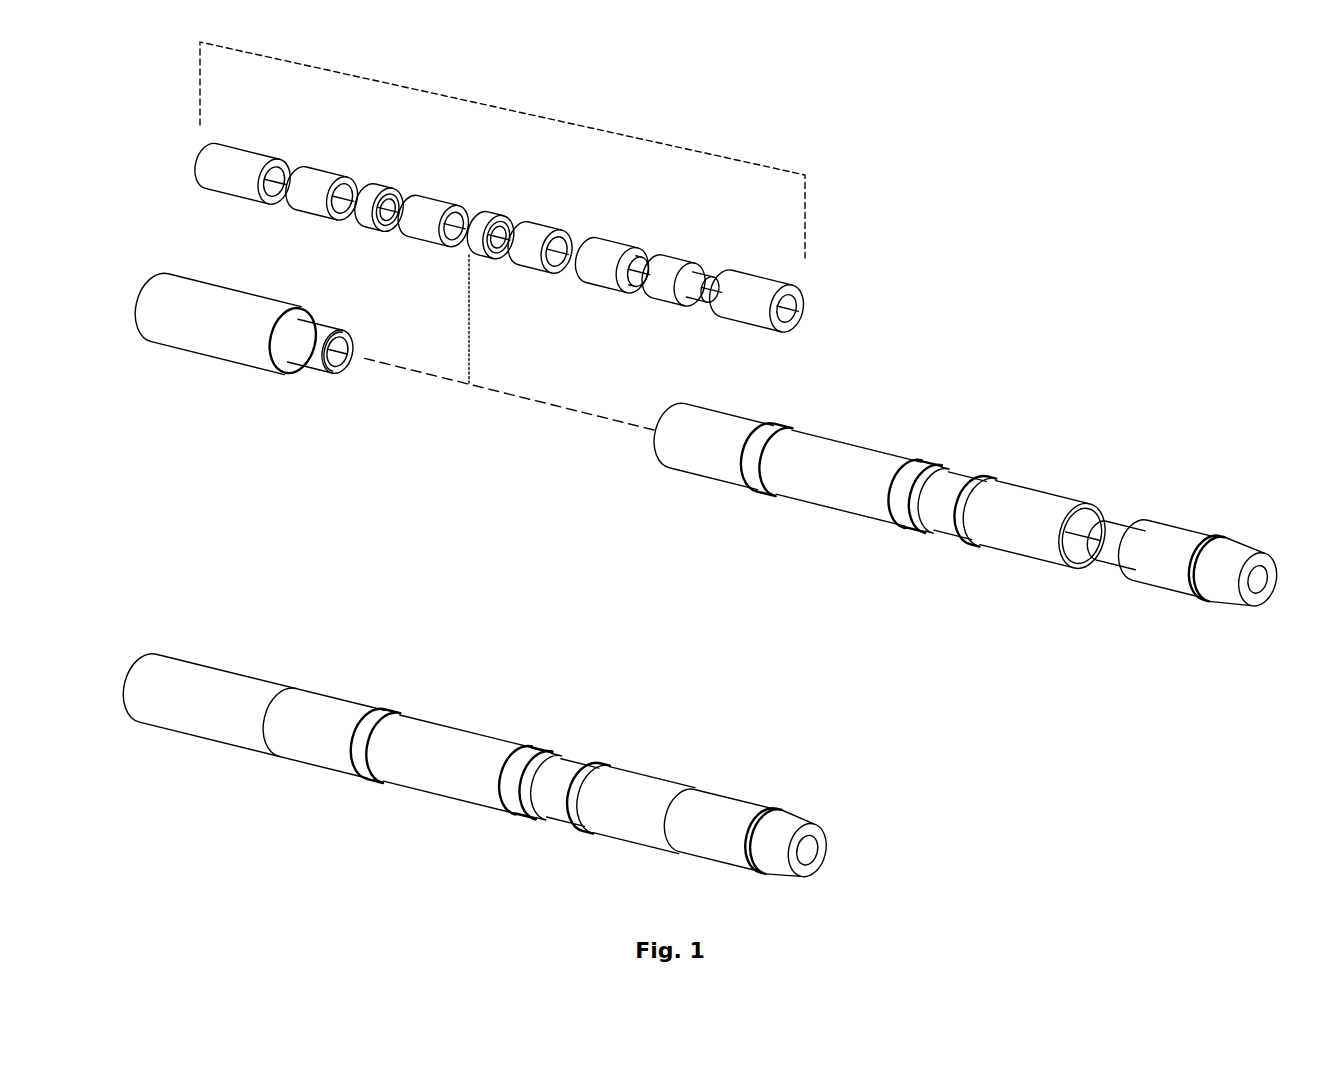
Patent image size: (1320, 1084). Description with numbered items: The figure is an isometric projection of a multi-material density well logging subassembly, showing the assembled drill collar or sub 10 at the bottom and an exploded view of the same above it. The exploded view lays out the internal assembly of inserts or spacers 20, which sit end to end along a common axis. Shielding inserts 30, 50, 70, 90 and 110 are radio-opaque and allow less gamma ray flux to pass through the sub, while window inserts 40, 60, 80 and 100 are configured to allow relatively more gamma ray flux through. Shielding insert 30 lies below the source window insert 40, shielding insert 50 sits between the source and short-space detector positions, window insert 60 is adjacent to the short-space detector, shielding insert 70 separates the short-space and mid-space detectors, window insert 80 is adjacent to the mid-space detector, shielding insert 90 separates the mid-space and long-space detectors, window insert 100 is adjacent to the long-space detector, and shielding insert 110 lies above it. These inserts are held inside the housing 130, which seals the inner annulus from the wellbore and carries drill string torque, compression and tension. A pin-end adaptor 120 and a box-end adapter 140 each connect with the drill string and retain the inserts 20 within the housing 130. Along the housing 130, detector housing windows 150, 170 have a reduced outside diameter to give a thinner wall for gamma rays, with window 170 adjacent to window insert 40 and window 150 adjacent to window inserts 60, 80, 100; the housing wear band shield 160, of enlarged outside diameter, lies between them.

The multi-material density drill collar or sub 10 is at (518, 682).
The inserts or spacers 20 is at (501, 108).
The shielding insert 30 is at (754, 284).
The window insert 40 is at (673, 265).
The shielding insert 50 is at (606, 252).
The window insert 60 is at (540, 233).
The shielding insert 70 is at (485, 218).
The window insert 80 is at (435, 205).
The shielding insert 90 is at (377, 197).
The window insert 100 is at (323, 178).
The shielding insert 110 is at (242, 157).
The pin-end adaptor 120 is at (1158, 626).
The housing 130 is at (844, 533).
The box-end adapter 140 is at (203, 376).
The detector housing window 150 is at (845, 446).
The housing wear band shield 160 is at (933, 456).
The detector housing window 170 is at (966, 471).